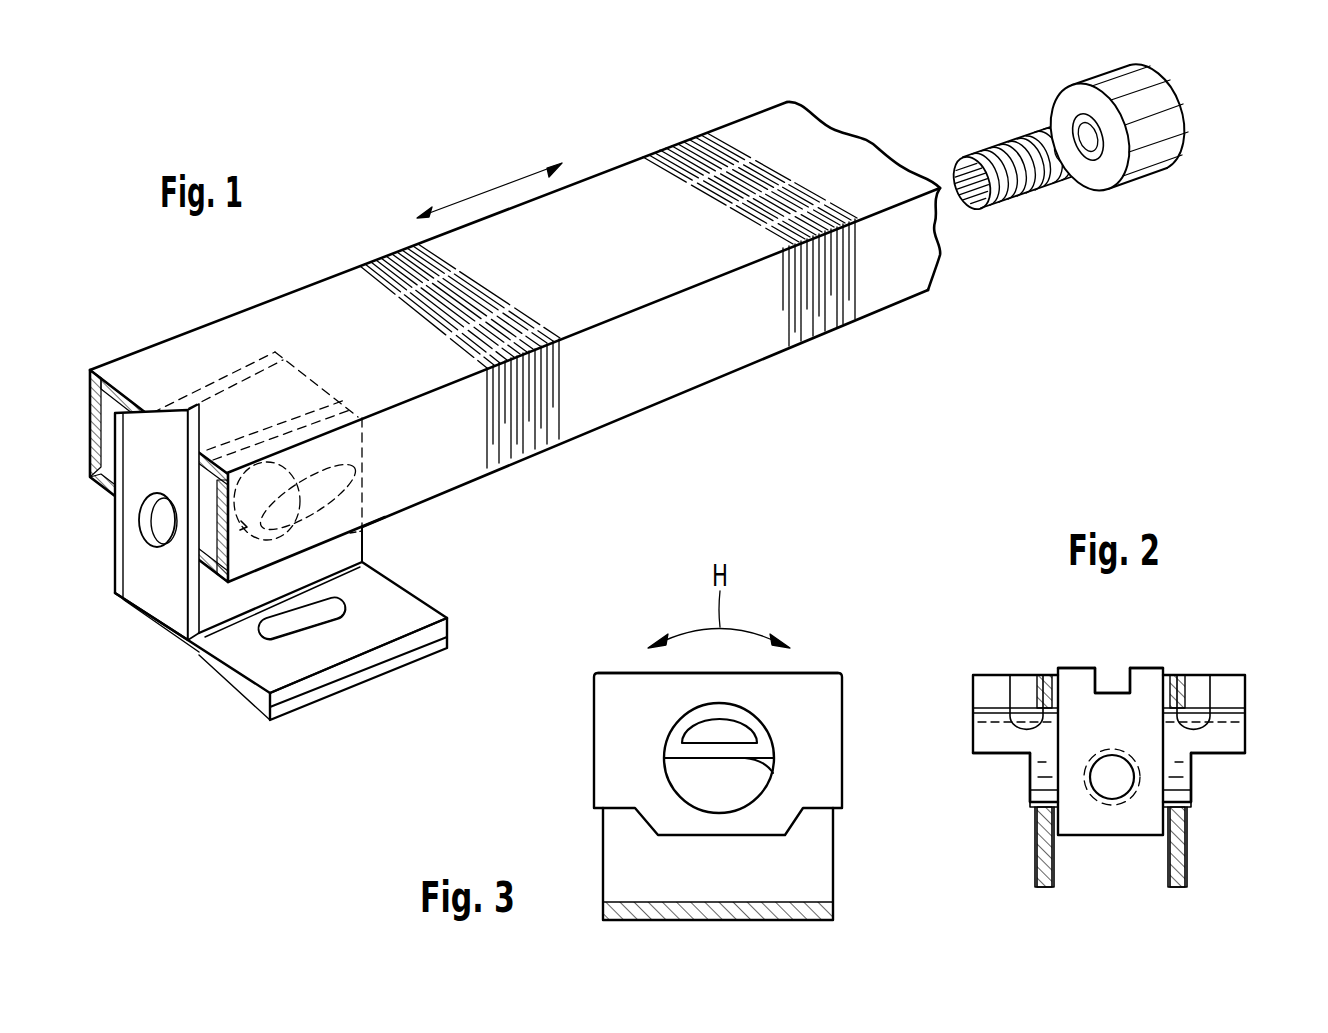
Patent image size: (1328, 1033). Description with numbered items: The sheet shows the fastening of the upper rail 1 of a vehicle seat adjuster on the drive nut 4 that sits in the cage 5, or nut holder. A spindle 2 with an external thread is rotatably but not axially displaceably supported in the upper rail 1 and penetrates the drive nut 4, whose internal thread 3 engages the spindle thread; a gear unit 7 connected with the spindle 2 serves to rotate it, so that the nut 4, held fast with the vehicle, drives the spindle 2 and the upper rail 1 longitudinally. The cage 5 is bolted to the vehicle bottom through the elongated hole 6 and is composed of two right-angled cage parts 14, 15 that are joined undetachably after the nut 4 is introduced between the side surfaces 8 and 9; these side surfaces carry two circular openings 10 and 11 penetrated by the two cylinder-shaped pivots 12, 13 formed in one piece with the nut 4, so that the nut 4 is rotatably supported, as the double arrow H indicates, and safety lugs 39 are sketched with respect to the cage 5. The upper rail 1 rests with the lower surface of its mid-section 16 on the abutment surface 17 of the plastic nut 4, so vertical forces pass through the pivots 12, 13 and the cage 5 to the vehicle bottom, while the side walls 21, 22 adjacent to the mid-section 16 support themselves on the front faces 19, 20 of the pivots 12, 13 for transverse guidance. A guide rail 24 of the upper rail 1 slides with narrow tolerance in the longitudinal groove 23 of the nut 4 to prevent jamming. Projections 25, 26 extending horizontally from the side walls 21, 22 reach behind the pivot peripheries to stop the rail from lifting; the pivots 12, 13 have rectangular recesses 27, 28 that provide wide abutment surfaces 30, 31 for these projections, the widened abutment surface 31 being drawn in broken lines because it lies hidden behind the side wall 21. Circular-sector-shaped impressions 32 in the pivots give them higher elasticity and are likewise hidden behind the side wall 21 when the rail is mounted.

In FIG. 1, the upper rail 1 is at (855, 302).
In FIG. 1, the spindle 2 is at (997, 143).
In FIG. 1, the internal thread 3 is at (153, 530).
In FIG. 2, the internal thread 3 is at (1112, 795).
In FIG. 1, the drive nut 4 is at (168, 582).
In FIG. 2, the drive nut 4 is at (1128, 718).
In FIG. 3, the drive nut 4 is at (633, 694).
In FIG. 1, the cage 5 is at (228, 638).
In FIG. 1, the elongated hole 6 is at (275, 640).
In FIG. 1, the gear unit 7 is at (1157, 160).
In FIG. 1, the side surface 8 is at (343, 558).
In FIG. 2, the side surface 8 is at (1182, 870).
In FIG. 1, the side surface 9 is at (120, 520).
In FIG. 2, the side surface 9 is at (1043, 870).
In FIG. 3, the side surface 9 is at (800, 864).
In FIG. 2, the circular opening 10 is at (1030, 730).
In FIG. 2, the circular opening 11 is at (1188, 730).
In FIG. 2, the pivot 12 is at (1042, 780).
In FIG. 2, the pivot 13 is at (1180, 780).
In FIG. 3, the pivot 13 is at (680, 778).
In FIG. 1, the cage part 14 is at (260, 700).
In FIG. 1, the cage part 15 is at (240, 693).
In FIG. 1, the mid-section 16 is at (835, 155).
In FIG. 2, the abutment surface 17 is at (1075, 668).
In FIG. 3, the abutment surface 17 is at (818, 672).
In FIG. 1, the front face 19 is at (353, 472).
In FIG. 2, the front face 19 is at (1245, 724).
In FIG. 3, the front face 19 is at (755, 727).
In FIG. 2, the front face 20 is at (975, 724).
In FIG. 1, the side wall 21 is at (630, 387).
In FIG. 1, the side wall 22 is at (90, 400).
In FIG. 2, the longitudinal groove 23 is at (1113, 680).
In FIG. 1, the guide rail 24 is at (165, 422).
In FIG. 1, the projection 25 is at (102, 482).
In FIG. 1, the projection 26 is at (200, 572).
In FIG. 2, the rectangular recess 27 is at (1010, 768).
In FIG. 2, the rectangular recess 28 is at (1212, 768).
In FIG. 2, the abutment surface 30 is at (988, 753).
In FIG. 1, the abutment surface 31 is at (352, 533).
In FIG. 2, the abutment surface 31 is at (1235, 753).
In FIG. 3, the abutment surface 31 is at (775, 769).
In FIG. 1, the circular-sector-shaped impression 32 is at (357, 442).
In FIG. 3, the circular-sector-shaped impression 32 is at (695, 735).
In FIG. 2, the safety lug 39 is at (973, 683).